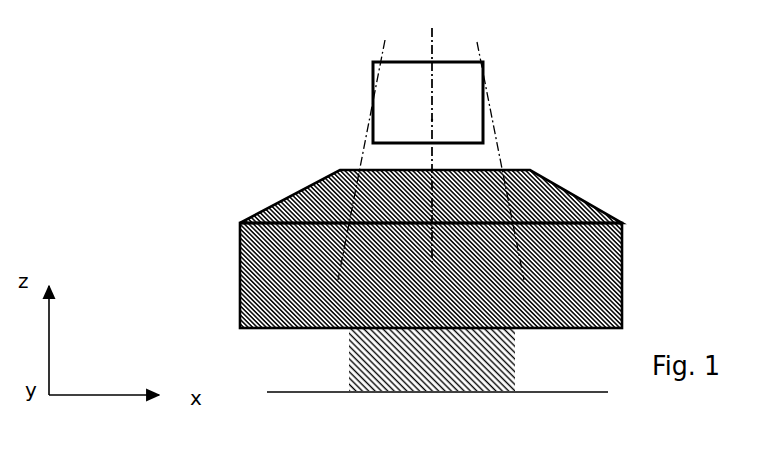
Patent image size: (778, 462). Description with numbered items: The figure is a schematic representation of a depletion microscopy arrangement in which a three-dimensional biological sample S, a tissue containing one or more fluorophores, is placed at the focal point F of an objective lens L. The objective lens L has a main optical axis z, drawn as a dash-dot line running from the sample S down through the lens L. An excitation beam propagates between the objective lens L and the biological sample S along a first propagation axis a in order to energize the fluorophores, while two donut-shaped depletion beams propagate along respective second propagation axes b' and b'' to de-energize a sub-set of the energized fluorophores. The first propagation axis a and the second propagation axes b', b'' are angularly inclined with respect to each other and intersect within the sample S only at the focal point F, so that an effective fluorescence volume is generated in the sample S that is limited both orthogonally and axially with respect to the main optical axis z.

The objective lens L is at (278, 297).
The biological sample S is at (373, 110).
The focal point F is at (452, 120).
The first propagation axis a is at (423, 148).
The main optical axis z is at (443, 148).
The second propagation axis b' is at (417, 156).
The second propagation axis b'' is at (450, 158).